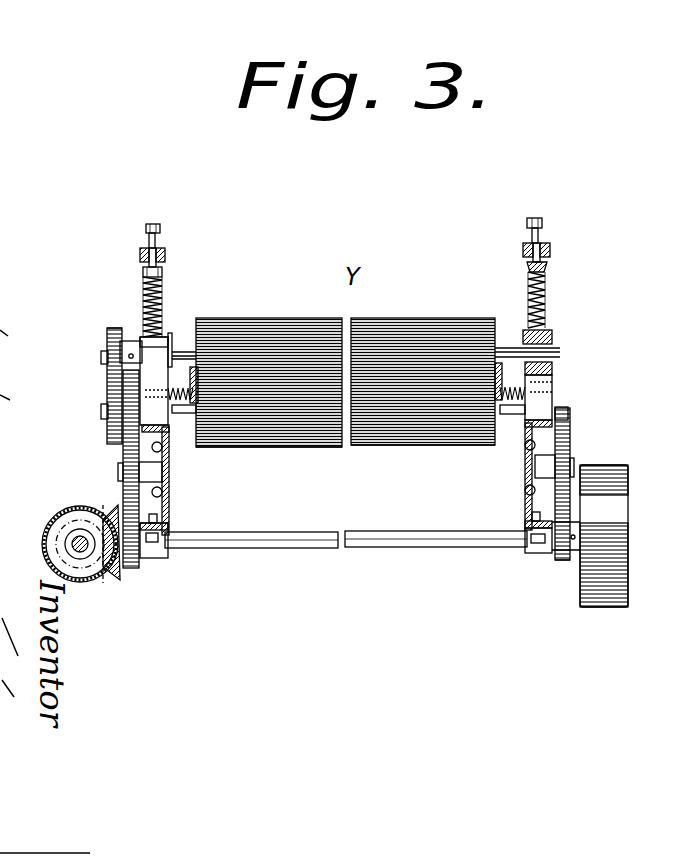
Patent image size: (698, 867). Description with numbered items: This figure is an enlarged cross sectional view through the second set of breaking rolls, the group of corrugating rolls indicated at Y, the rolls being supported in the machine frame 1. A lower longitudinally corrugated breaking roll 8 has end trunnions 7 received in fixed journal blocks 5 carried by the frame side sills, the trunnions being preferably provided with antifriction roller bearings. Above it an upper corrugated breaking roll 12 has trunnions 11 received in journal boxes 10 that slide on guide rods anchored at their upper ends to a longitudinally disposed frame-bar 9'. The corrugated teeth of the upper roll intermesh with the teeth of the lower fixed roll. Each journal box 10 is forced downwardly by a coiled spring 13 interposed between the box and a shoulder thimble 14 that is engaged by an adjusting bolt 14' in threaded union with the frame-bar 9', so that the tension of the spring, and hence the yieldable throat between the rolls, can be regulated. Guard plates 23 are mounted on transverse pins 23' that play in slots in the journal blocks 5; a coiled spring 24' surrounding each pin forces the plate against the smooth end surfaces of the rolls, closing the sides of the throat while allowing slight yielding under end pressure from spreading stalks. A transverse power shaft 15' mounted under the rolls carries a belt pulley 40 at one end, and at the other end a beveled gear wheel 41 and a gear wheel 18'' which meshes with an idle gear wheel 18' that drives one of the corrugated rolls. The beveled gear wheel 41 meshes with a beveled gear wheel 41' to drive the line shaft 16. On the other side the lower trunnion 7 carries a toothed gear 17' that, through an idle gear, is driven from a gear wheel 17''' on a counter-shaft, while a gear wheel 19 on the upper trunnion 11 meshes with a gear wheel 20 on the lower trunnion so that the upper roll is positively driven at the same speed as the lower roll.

The frame plate 1 is at (170, 512).
The fixed journal block 5 is at (157, 424).
The end trunnion 7 is at (101, 412).
The longitudinally corrugated breaking roll 8 is at (295, 448).
The frame-bar 9' is at (345, 250).
The journal box 10 is at (150, 341).
The trunnion 11 is at (101, 357).
The corrugated breaking roll 12 is at (318, 319).
The coiled spring 13 is at (145, 291).
The shoulder thimble 14 is at (370, 268).
The adjusting bolt 14' is at (372, 227).
The transverse power shaft 15' is at (372, 521).
The line shaft 16 is at (66, 550).
The toothed gear 17' is at (149, 379).
The gear wheel 17''' is at (132, 481).
The idle gear wheel 18' is at (596, 484).
The gear wheel 18'' is at (566, 581).
The toothed gear wheel 19 is at (104, 333).
The gear wheel 20 is at (106, 390).
The guard plate 23 is at (346, 343).
The transverse pin 23' is at (569, 378).
The spring 24' is at (380, 343).
The belt pulley 40 is at (622, 466).
The beveled gear wheel 41 is at (123, 561).
The beveled gear wheel 41' is at (73, 532).